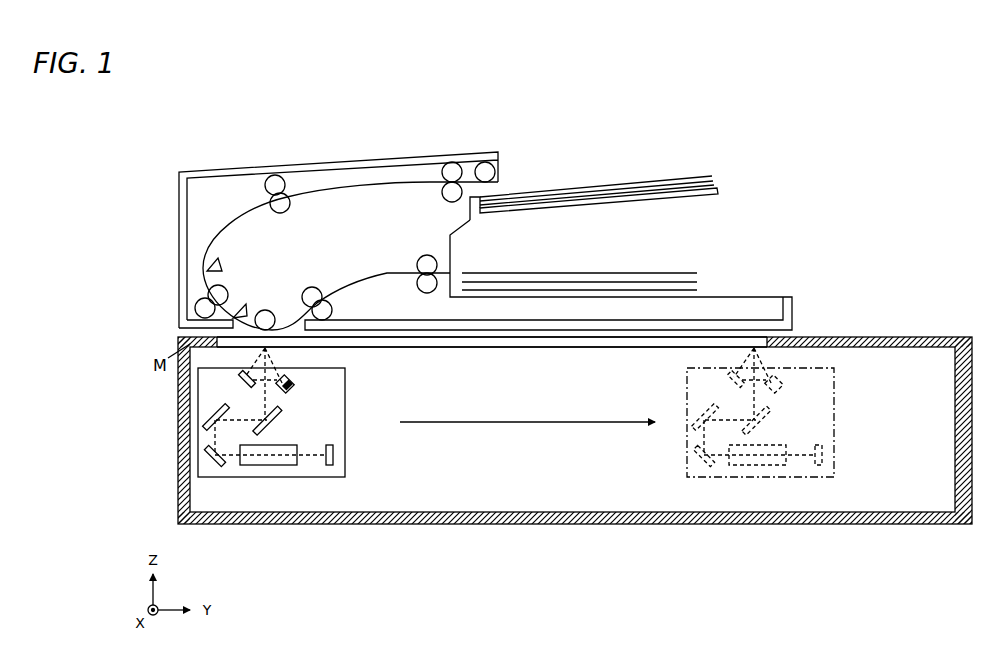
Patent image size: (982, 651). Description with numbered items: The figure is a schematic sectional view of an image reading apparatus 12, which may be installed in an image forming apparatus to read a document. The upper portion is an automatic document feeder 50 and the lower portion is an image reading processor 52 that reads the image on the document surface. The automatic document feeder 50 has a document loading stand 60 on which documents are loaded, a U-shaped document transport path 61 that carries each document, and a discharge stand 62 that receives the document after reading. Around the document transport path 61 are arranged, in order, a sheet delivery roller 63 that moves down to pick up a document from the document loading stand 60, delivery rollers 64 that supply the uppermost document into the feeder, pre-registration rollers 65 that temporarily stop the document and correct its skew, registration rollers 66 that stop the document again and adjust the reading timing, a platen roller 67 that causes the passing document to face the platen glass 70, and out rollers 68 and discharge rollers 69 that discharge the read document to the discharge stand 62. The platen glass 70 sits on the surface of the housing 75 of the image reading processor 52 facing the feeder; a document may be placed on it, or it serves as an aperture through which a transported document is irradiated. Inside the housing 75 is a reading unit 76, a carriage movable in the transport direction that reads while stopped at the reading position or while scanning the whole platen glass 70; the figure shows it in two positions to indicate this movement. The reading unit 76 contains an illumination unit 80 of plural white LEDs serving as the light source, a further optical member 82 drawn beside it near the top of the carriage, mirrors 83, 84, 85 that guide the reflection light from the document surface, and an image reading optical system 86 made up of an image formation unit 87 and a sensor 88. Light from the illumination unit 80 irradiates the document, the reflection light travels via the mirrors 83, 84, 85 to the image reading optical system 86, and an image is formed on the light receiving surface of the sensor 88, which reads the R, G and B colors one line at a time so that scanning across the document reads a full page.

The image reading apparatus 12 is at (790, 130).
The automatic document feeder 50 is at (765, 203).
The image reading processor 52 is at (930, 287).
The document loading stand 60 is at (645, 202).
The document transport path 61 is at (370, 185).
The discharge stand 62 is at (746, 297).
The sheet delivery roller 63 is at (496, 173).
The delivery rollers 64 is at (453, 162).
The pre-registration rollers 65 is at (277, 175).
The registration rollers 66 is at (222, 290).
The platen roller 67 is at (267, 310).
The out rollers 68 is at (315, 287).
The discharge rollers 69 is at (427, 255).
The platen glass 70 is at (534, 348).
The housing 75 is at (862, 337).
The reading unit (carriage) 76 is at (516, 430).
The illumination unit 80 is at (296, 385).
The first mirror 82 is at (246, 372).
The mirror 83 is at (280, 428).
The mirror 84 is at (213, 413).
The mirror 85 is at (212, 465).
The image reading optical system 86 is at (278, 474).
The image formation unit 87 is at (249, 466).
The sensor 88 is at (336, 455).